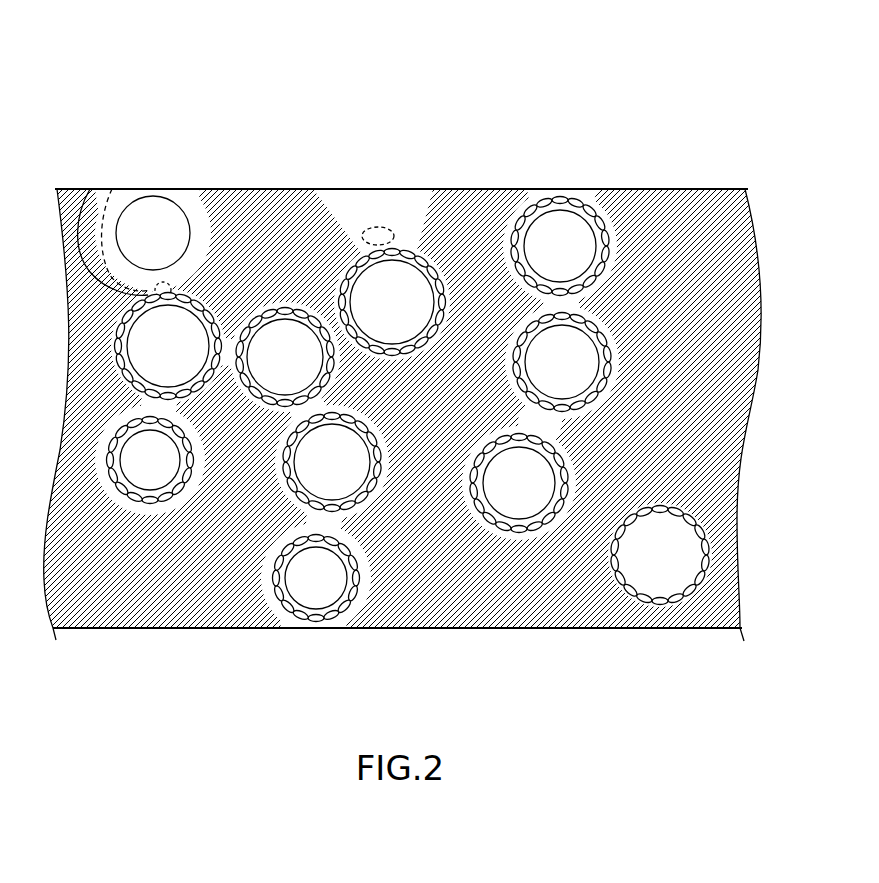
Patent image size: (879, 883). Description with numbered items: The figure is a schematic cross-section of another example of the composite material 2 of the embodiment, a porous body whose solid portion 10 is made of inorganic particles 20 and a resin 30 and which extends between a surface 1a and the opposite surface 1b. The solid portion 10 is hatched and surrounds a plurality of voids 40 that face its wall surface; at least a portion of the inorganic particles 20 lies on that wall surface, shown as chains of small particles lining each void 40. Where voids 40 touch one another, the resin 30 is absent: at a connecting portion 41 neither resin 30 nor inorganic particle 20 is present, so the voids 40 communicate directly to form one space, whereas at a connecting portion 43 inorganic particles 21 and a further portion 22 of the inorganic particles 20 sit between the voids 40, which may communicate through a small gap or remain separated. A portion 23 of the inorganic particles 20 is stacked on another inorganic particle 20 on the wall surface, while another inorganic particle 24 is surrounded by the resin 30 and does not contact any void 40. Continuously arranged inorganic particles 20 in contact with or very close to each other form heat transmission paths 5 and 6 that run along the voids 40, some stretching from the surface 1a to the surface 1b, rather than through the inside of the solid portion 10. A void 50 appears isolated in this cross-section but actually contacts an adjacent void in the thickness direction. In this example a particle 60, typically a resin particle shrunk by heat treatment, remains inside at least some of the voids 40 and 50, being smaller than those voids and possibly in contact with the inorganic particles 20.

The composite member 2 is at (122, 92).
The surface 1a is at (708, 189).
The surface 1b is at (702, 630).
The heat transmission path 5 is at (404, 242).
The heat transmission path 6 is at (533, 214).
The solid portion 10 is at (560, 113).
The inorganic particles 20 is at (592, 208).
The inorganic particles 21 is at (373, 237).
The portion of the inorganic particles 22 is at (346, 233).
The portion of the inorganic particles 23 is at (462, 226).
The inorganic particle 24 is at (86, 189).
The resin 30 is at (666, 206).
The voids 40 is at (330, 313).
The connecting portion 41 is at (112, 189).
The connecting portion 43 is at (374, 227).
The void 50 is at (652, 543).
The particle 60 is at (152, 222).